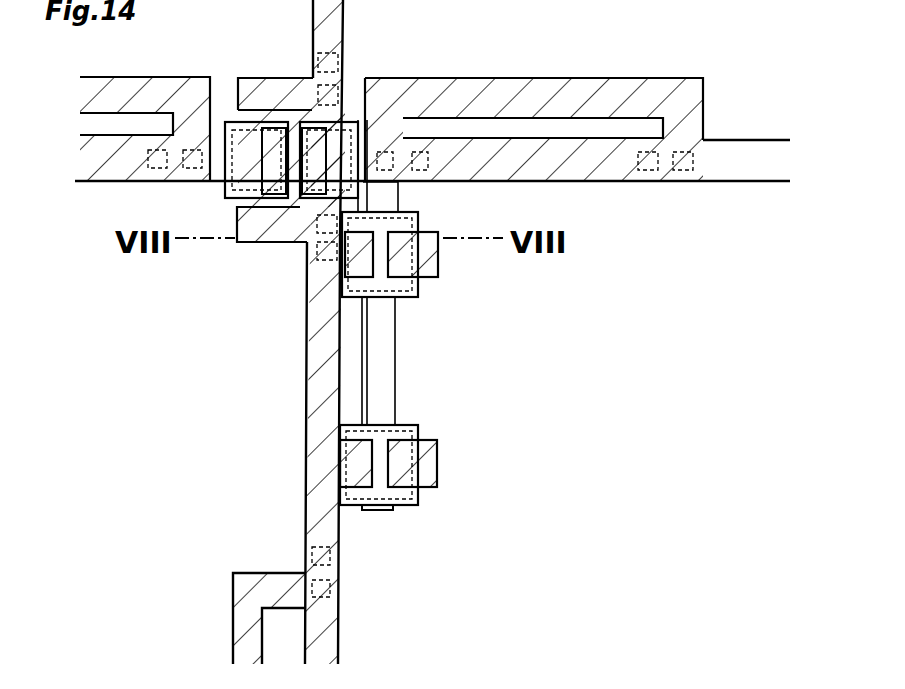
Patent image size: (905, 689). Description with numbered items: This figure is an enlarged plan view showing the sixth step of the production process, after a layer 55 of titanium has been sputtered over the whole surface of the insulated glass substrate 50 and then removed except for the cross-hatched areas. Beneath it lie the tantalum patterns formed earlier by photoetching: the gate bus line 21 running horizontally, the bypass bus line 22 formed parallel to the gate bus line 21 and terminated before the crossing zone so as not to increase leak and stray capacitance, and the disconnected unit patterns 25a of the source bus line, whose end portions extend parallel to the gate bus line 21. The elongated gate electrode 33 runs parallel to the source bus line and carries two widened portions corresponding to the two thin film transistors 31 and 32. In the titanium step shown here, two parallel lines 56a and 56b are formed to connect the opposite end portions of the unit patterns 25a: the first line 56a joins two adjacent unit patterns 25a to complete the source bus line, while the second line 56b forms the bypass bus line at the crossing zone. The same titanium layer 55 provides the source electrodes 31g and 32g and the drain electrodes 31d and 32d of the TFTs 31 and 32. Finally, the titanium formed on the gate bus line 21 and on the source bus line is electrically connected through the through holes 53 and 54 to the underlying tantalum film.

The gate bus line 21 is at (735, 140).
The bypass bus line 22 is at (602, 77).
The unit pattern 25a is at (343, 18).
The TFT 31 is at (452, 300).
The drain electrode 31d is at (438, 277).
The source electrode 31g is at (375, 270).
The TFT 32 is at (455, 500).
The drain electrode 32d is at (437, 483).
The source electrode 32g is at (372, 470).
The gate electrode 33 is at (395, 385).
The insulated glass substrate 50 is at (604, 489).
The through hole 53 is at (425, 167).
The through hole 54 is at (320, 250).
The layer of titanium 55 is at (427, 630).
The first line 56a is at (356, 125).
The second line 56b is at (240, 120).